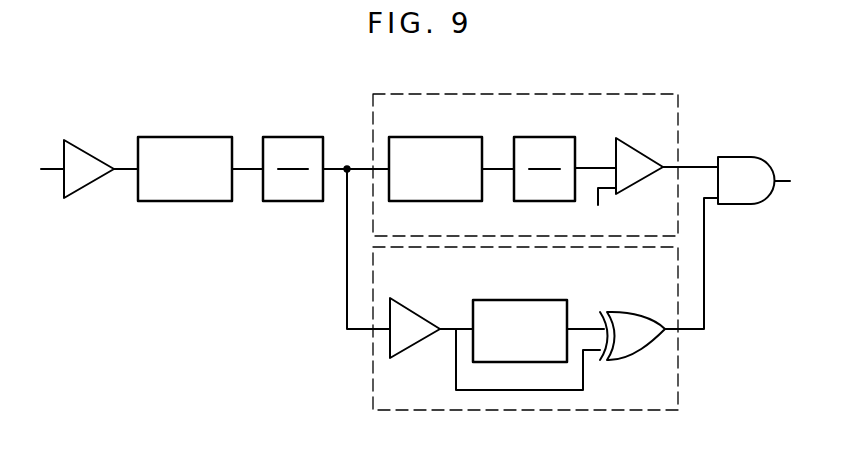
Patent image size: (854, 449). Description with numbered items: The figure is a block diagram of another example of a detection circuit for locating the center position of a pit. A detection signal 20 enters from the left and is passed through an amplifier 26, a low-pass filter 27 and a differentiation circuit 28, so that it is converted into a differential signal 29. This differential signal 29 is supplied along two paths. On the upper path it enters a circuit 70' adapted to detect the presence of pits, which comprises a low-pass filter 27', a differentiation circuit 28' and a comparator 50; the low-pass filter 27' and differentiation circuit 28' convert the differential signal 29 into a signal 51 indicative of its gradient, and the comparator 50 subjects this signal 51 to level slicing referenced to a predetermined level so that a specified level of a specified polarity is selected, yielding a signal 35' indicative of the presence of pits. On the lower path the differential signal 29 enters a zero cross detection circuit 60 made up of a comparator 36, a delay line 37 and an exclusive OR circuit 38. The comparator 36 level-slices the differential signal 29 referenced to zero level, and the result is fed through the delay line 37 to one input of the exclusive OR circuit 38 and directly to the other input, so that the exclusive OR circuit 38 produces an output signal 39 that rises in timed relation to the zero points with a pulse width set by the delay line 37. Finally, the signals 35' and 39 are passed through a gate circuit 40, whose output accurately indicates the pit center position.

The detection signal 20 is at (45, 172).
The amplifier 26 is at (95, 150).
The low-pass filter 27 is at (185, 152).
The differentiation circuit 28 is at (293, 152).
The differential signal 29 is at (336, 167).
The circuit adapted to detect the presence of pits 70' is at (525, 147).
The low-pass filter 27' is at (435, 154).
The differentiation circuit 28' is at (544, 154).
The signal 51 is at (593, 166).
The comparator 50 is at (643, 143).
The signal indicative of the presence of pits 35' is at (694, 142).
The gate circuit 40 is at (756, 156).
The output signal 39 is at (705, 297).
The zero cross detection circuit 60 is at (679, 388).
The comparator 36 is at (422, 313).
The delay line 37 is at (535, 300).
The exclusive OR circuit 38 is at (645, 311).